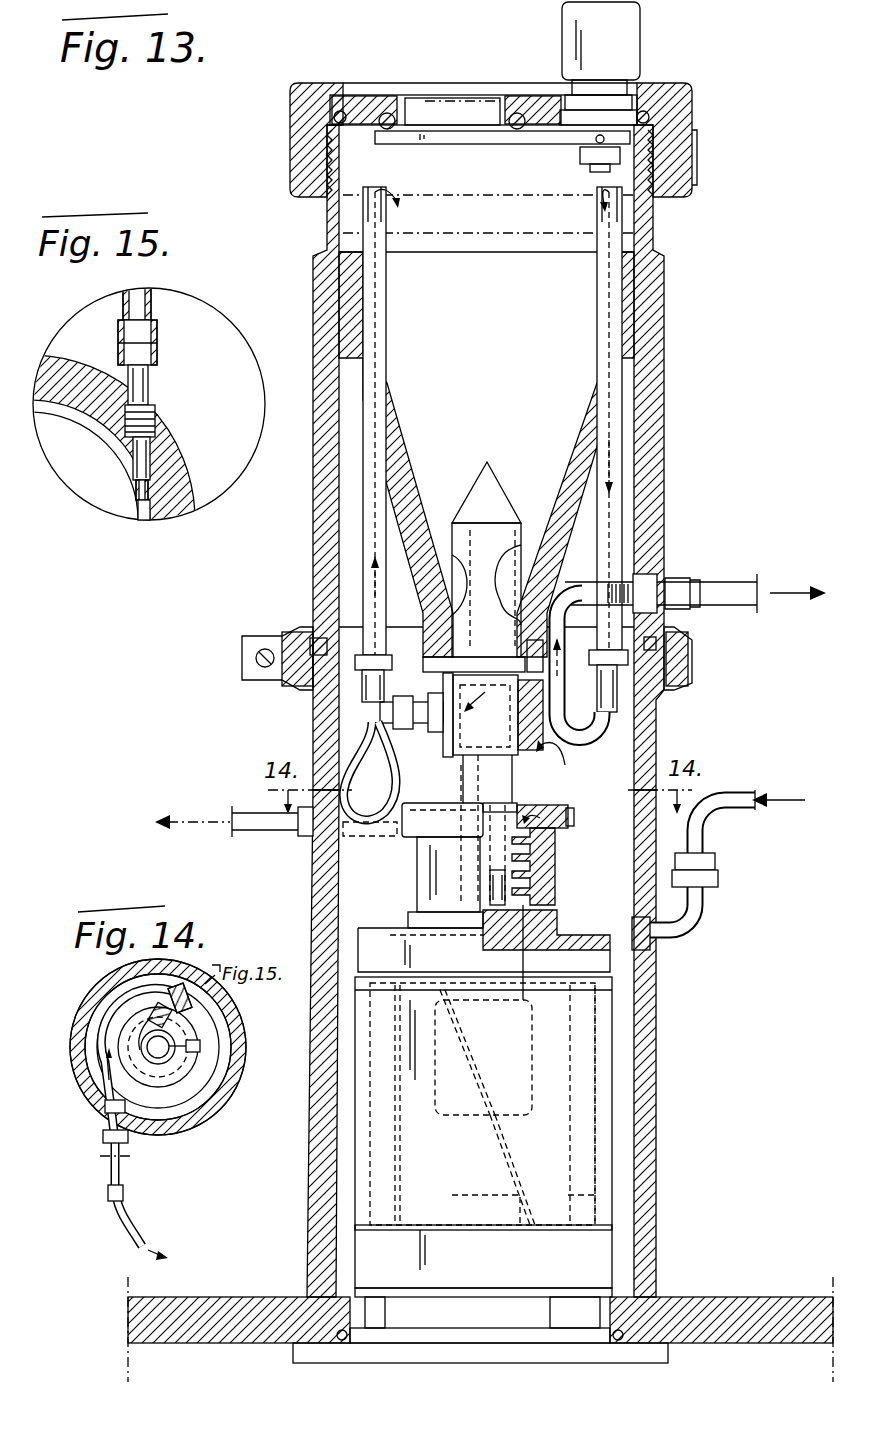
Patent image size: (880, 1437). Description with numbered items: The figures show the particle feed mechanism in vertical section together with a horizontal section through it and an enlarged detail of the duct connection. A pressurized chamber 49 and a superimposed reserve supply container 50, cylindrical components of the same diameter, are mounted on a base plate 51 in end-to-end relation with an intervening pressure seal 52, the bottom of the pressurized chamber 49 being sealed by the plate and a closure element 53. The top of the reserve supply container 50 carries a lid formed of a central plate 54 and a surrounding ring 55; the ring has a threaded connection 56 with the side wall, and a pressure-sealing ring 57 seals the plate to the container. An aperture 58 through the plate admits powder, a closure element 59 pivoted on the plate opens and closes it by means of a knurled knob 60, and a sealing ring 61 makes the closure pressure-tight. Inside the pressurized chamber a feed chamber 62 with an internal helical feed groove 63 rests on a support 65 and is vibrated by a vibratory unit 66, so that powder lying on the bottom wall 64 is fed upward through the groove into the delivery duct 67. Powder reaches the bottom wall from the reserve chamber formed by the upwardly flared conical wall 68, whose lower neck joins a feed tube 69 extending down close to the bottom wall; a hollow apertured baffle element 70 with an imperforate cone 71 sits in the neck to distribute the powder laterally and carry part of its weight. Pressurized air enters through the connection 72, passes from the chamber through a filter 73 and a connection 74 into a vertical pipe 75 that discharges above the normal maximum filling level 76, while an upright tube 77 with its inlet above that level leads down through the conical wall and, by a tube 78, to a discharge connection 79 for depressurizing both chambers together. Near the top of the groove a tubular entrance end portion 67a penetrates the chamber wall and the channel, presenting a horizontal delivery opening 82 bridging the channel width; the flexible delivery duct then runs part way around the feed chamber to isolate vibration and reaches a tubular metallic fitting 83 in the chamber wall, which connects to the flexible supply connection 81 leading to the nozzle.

In FIG. 13, the pressurized chamber 49 is at (648, 1123).
In FIG. 14, the pressurized chamber 49 is at (212, 1112).
In FIG. 13, the reserve supply container 50 is at (652, 402).
In FIG. 13, the base plate 51 is at (228, 1338).
In FIG. 13, the pressure seal 52 is at (305, 628).
In FIG. 13, the closure element 53 is at (432, 1356).
In FIG. 13, the central plate 54 is at (375, 104).
In FIG. 13, the surrounding ring 55 is at (300, 99).
In FIG. 13, the threaded connection 56 is at (327, 200).
In FIG. 13, the pressure-sealing ring 57 is at (334, 118).
In FIG. 13, the aperture 58 is at (485, 108).
In FIG. 13, the closure element 59 is at (465, 146).
In FIG. 13, the knurled knob 60 is at (628, 48).
In FIG. 13, the sealing ring 61 is at (527, 132).
In FIG. 13, the feed chamber 62 is at (556, 865).
In FIG. 15, the feed chamber 62 is at (156, 460).
In FIG. 14, the feed chamber 62 is at (130, 1028).
In FIG. 13, the helical feed groove 63 is at (558, 888).
In FIG. 15, the helical feed groove 63 is at (128, 458).
In FIG. 14, the helical feed groove 63 is at (158, 1010).
In FIG. 13, the bottom wall 64 is at (534, 958).
In FIG. 13, the support 65 is at (360, 944).
In FIG. 13, the vibratory unit 66 is at (494, 1102).
In FIG. 13, the delivery duct 67 is at (380, 842).
In FIG. 15, the delivery duct 67 is at (137, 288).
In FIG. 14, the delivery duct 67 is at (108, 1076).
In FIG. 13, the tubular entrance end portion 67a is at (608, 835).
In FIG. 15, the tubular entrance end portion 67a is at (158, 423).
In FIG. 14, the tubular entrance end portion 67a is at (195, 998).
In FIG. 13, the conical wall 68 is at (586, 428).
In FIG. 13, the feed tube 69 is at (472, 783).
In FIG. 14, the feed tube 69 is at (163, 1058).
In FIG. 13, the baffle element 70 is at (462, 530).
In FIG. 13, the imperforate cone 71 is at (478, 493).
In FIG. 13, the connection 72 is at (700, 843).
In FIG. 13, the filter 73 is at (455, 731).
In FIG. 13, the connection 74 is at (358, 750).
In FIG. 13, the vertical pipe 75 is at (378, 326).
In FIG. 13, the normal maximum filling level 76 is at (452, 285).
In FIG. 13, the upright tube 77 is at (606, 296).
In FIG. 13, the tube 78 is at (610, 733).
In FIG. 13, the discharge connection 79 is at (676, 590).
In FIG. 14, the supply connection 81 is at (130, 1226).
In FIG. 13, the delivery opening 82 is at (530, 794).
In FIG. 15, the delivery opening 82 is at (145, 522).
In FIG. 14, the delivery opening 82 is at (200, 1042).
In FIG. 13, the tubular metallic fitting 83 is at (305, 845).
In FIG. 14, the tubular metallic fitting 83 is at (105, 1120).